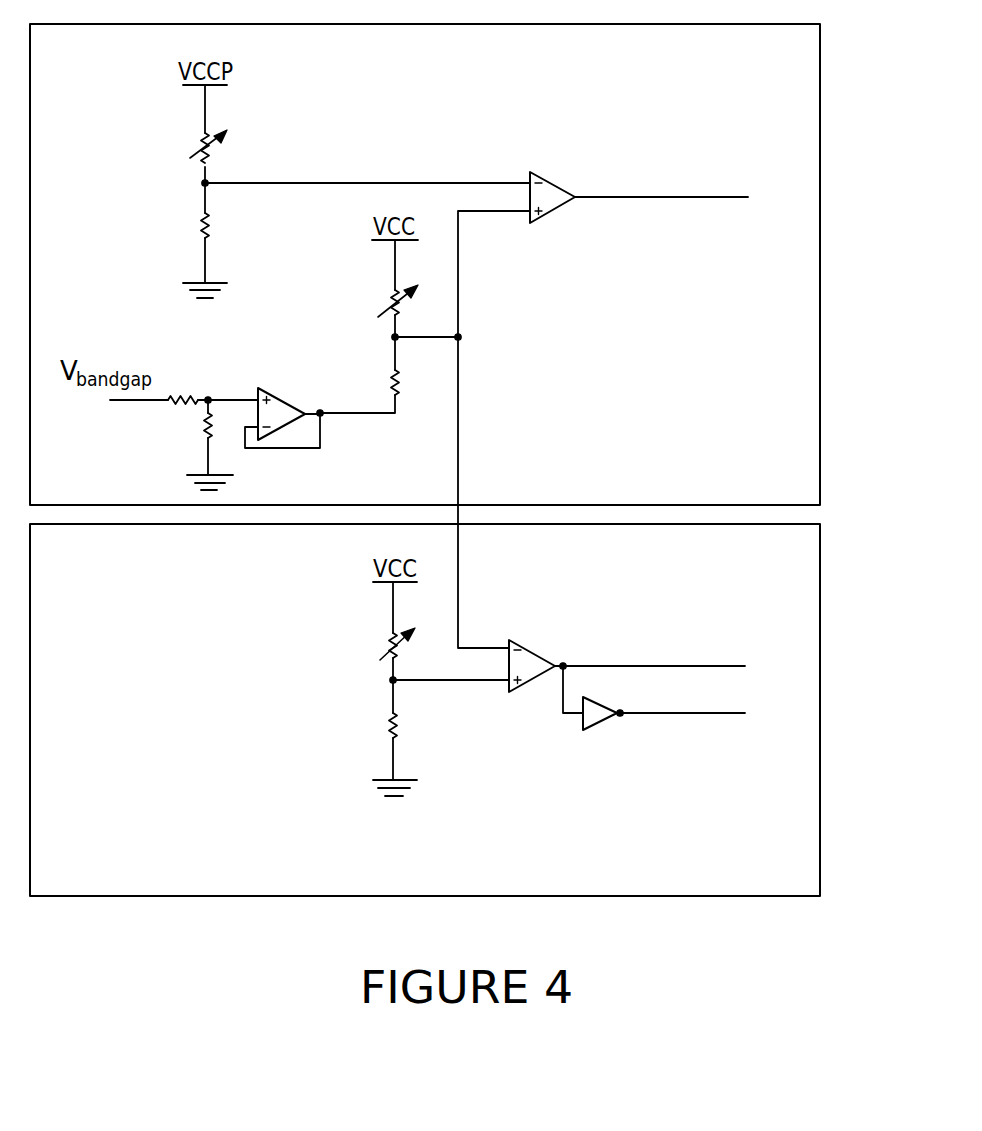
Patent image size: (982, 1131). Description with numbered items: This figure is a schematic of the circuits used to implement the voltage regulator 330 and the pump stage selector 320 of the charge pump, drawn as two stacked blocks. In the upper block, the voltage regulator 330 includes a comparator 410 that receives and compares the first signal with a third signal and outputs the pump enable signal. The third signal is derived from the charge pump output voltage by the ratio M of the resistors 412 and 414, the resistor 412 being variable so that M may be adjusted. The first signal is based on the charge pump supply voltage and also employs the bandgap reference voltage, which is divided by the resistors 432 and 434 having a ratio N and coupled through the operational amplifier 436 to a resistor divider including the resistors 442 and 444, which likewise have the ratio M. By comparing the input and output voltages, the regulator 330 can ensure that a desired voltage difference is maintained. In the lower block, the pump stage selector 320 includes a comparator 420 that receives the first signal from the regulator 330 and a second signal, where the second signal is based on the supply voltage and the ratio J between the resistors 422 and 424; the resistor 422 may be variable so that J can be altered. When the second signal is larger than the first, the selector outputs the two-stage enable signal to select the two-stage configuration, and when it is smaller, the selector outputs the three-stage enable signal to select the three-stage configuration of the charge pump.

The voltage regulator 330 is at (820, 398).
The pump stage selector 320 is at (820, 590).
The comparator 410 is at (554, 181).
The resistor 412 is at (214, 161).
The resistor 414 is at (213, 235).
The comparator 420 is at (545, 630).
The resistor 422 is at (396, 657).
The resistor 424 is at (397, 716).
The resistor 432 is at (168, 405).
The resistor 434 is at (212, 437).
The operational amplifier 436 is at (287, 397).
The resistor 442 is at (393, 318).
The resistor 444 is at (397, 397).